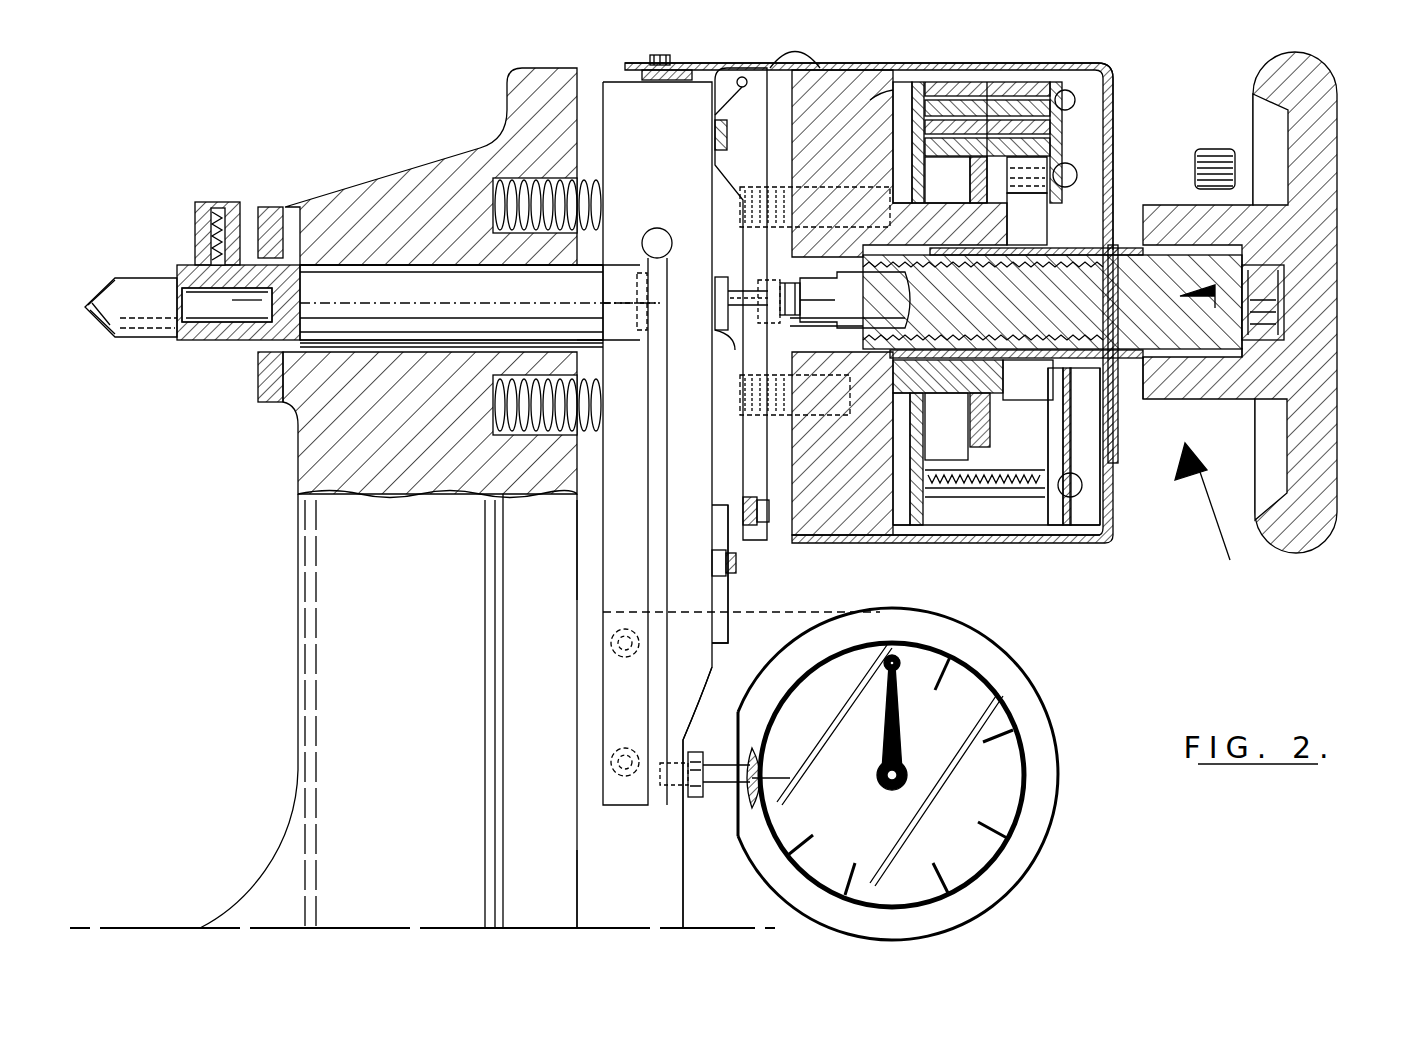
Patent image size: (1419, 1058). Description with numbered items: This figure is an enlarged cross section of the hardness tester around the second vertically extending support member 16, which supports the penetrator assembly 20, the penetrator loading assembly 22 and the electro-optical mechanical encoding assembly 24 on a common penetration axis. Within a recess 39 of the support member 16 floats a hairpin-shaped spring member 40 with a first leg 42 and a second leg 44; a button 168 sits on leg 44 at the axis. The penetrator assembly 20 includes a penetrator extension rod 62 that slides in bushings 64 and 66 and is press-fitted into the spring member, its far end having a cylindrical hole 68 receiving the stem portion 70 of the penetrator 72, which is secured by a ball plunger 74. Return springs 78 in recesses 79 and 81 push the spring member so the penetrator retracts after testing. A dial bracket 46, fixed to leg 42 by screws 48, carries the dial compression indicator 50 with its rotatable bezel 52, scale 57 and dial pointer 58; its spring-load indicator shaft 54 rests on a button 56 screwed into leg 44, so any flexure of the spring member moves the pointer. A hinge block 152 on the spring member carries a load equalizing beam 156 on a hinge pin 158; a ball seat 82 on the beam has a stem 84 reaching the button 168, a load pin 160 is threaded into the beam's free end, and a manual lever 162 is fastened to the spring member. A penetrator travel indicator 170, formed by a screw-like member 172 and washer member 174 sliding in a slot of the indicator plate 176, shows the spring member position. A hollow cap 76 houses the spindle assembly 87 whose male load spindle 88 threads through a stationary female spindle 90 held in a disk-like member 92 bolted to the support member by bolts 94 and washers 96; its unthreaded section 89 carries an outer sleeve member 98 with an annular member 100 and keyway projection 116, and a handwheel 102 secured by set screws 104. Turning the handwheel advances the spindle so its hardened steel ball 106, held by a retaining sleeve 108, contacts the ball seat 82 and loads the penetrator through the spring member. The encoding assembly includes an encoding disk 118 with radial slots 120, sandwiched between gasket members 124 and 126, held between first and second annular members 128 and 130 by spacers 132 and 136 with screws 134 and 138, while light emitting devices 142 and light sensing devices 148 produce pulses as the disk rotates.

The second vertically extending support member 16 is at (320, 668).
The penetrator assembly 20 is at (96, 262).
The penetrator loading assembly 22 is at (1213, 517).
The electro-optical mechanical encoding assembly 24 is at (940, 145).
The recess 39 is at (592, 886).
The spring member 40 is at (655, 186).
The first leg 42 is at (605, 542).
The second leg 44 is at (713, 596).
The dial bracket 46 is at (805, 640).
The screws 48 is at (610, 643).
The dial compression indicator 50 is at (918, 630).
The rotatable bezel 52 is at (950, 657).
The spring-load indicator shaft 54 is at (748, 800).
The button 56 is at (688, 797).
The scale 57 is at (1013, 792).
The dial pointer 58 is at (900, 722).
The penetrator extension rod 62 is at (245, 340).
The bushing 64 is at (272, 400).
The bushing 66 is at (590, 350).
The cylindrical hole 68 is at (198, 338).
The stem portion 70 is at (265, 300).
The penetrator 72 is at (145, 318).
The ball plunger 74 is at (210, 202).
The cylindrical hollow cap 76 is at (1108, 66).
The return springs 78 is at (500, 180).
The recess 79 is at (600, 340).
The recess 81 is at (510, 268).
The ball seat 82 is at (790, 292).
The stem 84 is at (732, 338).
The spindle assembly 87 is at (1215, 296).
The male load spindle 88 is at (1082, 312).
The unthreaded section 89 is at (1215, 380).
The female spindle 90 is at (1078, 372).
The disk-like member 92 is at (880, 505).
The bolts 94 is at (860, 170).
The washers 96 is at (840, 185).
The outer sleeve member 98 is at (1162, 395).
The annular member 100 is at (950, 395).
The handwheel 102 is at (1338, 428).
The set screws 104 is at (1213, 149).
The hardened steel ball 106 is at (805, 320).
The retaining sleeve 108 is at (840, 300).
The keyway projection 116 is at (1013, 200).
The encoding disk 118 is at (985, 448).
The radially extending slots 120 is at (1040, 140).
The gasket member 124 is at (965, 492).
The gasket member 126 is at (1000, 492).
The first annular member 128 is at (930, 515).
The second annular member 130 is at (1072, 510).
The spacers 132 is at (1000, 515).
The screws 134 is at (1082, 487).
The spacers 136 is at (1050, 190).
The screws 138 is at (1077, 172).
The light emitting devices 142 is at (940, 120).
The light sensing devices 148 is at (1075, 105).
The hinge block 152 is at (718, 150).
The load equalizing beam 156 is at (765, 132).
The hinge pin 158 is at (738, 90).
The load pin 160 is at (768, 530).
The manual lever 162 is at (716, 585).
The button 168 is at (718, 296).
The penetrator travel indicator 170 is at (600, 60).
The screw-like member 172 is at (662, 72).
The washer member 174 is at (650, 82).
The indicator plate 176 is at (812, 68).